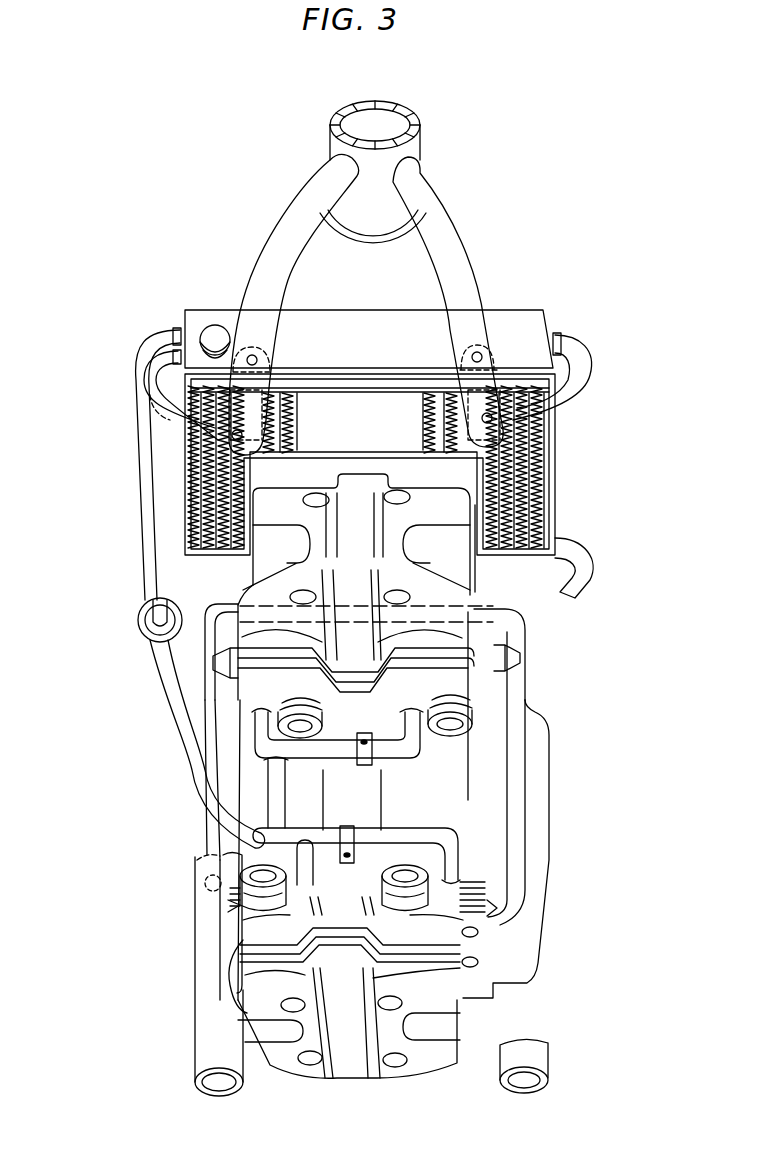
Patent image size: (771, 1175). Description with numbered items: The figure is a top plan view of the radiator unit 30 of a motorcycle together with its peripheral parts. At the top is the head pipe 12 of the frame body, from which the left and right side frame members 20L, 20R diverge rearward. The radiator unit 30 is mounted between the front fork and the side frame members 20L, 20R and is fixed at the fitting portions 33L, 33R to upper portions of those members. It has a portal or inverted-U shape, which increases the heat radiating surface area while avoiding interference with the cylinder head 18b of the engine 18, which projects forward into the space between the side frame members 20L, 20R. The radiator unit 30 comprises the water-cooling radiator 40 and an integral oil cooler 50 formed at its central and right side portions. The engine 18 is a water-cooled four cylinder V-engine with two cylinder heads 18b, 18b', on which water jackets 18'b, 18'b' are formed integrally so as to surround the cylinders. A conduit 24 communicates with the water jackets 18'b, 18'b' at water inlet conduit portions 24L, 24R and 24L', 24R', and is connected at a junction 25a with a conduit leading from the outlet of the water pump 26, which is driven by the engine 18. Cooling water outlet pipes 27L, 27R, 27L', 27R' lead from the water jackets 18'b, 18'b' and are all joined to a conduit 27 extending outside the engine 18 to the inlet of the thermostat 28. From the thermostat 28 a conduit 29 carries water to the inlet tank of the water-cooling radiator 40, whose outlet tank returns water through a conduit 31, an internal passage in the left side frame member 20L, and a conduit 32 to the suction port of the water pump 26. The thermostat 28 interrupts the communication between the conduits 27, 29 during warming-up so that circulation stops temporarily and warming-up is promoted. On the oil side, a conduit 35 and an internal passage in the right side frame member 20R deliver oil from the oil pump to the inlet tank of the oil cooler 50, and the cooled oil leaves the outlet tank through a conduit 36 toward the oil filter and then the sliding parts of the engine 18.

The head pipe 12 is at (423, 147).
The left side frame member 20L is at (300, 205).
The right side frame member 20R is at (430, 200).
The radiator unit 30 is at (375, 309).
The water-cooling radiator 40 is at (185, 472).
The oil cooler 50 is at (550, 440).
The left fitting portion 33L is at (248, 350).
The right fitting portion 33R is at (482, 347).
The conduit 29 is at (148, 341).
The conduit 31 is at (160, 362).
The conduit 35 is at (580, 362).
The conduit 36 is at (575, 552).
The thermostat 28 is at (148, 612).
The junction 25a is at (250, 605).
The cylinder head 18b is at (449, 567).
The engine 18 is at (426, 830).
The water jacket 18'b is at (453, 684).
The conduit 24 is at (513, 790).
The water inlet conduit portion 24L is at (145, 649).
The water inlet conduit portion 24R is at (577, 643).
The conduit 27 is at (250, 712).
The cooling water outlet pipe 27L is at (170, 769).
The cooling water outlet pipe 27R is at (441, 743).
The cooling water outlet pipe 27L' is at (355, 830).
The cooling water outlet pipe 27R' is at (460, 839).
The conduit 32 is at (230, 930).
The water pump 26 is at (232, 985).
The water inlet conduit portion 24L' is at (147, 925).
The water inlet conduit portion 24R' is at (576, 880).
The cylinder head 18b' is at (349, 1051).
The water jacket 18'b' is at (458, 921).